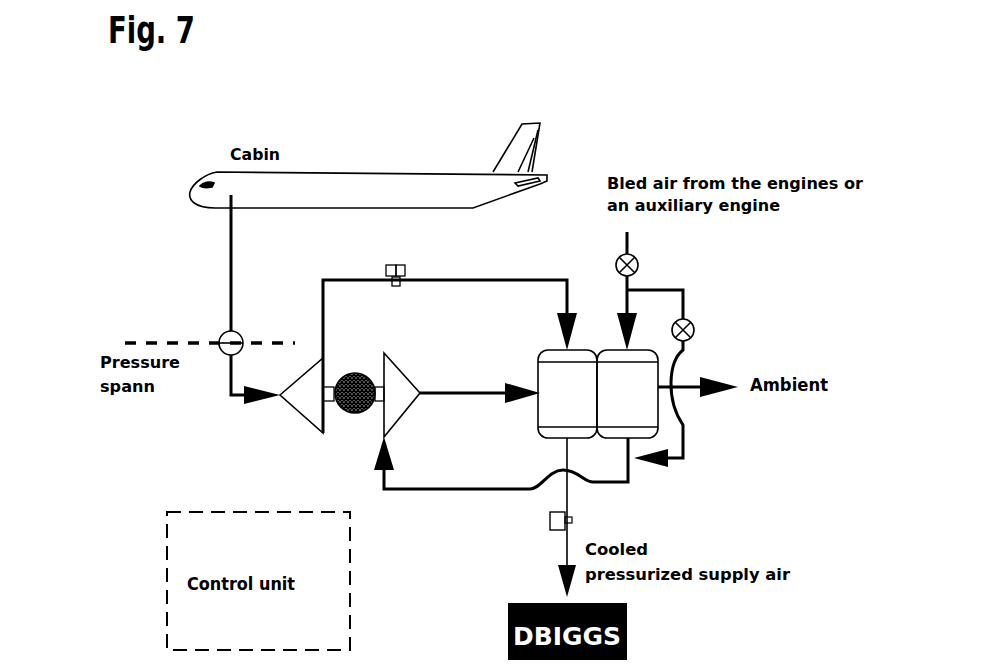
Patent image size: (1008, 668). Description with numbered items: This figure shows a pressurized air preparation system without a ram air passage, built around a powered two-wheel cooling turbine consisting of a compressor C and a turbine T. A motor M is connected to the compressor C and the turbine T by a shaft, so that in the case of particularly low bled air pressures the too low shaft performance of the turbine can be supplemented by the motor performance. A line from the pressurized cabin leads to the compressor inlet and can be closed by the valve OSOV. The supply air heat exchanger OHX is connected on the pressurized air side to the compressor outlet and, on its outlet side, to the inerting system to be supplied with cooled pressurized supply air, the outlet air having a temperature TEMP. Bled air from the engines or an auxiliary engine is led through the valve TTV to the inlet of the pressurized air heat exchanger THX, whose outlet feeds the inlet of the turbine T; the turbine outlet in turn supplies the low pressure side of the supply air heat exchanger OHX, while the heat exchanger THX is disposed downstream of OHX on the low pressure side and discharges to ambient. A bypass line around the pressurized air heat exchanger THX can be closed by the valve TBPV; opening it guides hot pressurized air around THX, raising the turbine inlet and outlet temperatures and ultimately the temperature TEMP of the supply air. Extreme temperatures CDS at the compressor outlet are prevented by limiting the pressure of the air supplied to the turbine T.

The valve OSOV is at (219, 330).
The compressor outlet temperature CDS is at (400, 260).
The compressor C is at (301, 395).
The motor M is at (353, 382).
The turbine T is at (402, 395).
The turbine temperature valve TTV is at (595, 252).
The valve TBPV is at (721, 329).
The supply air heat exchanger OHX is at (546, 376).
The pressurized air heat exchanger THX is at (640, 415).
The temperature of the OBIGGS supply air TEMP is at (511, 521).